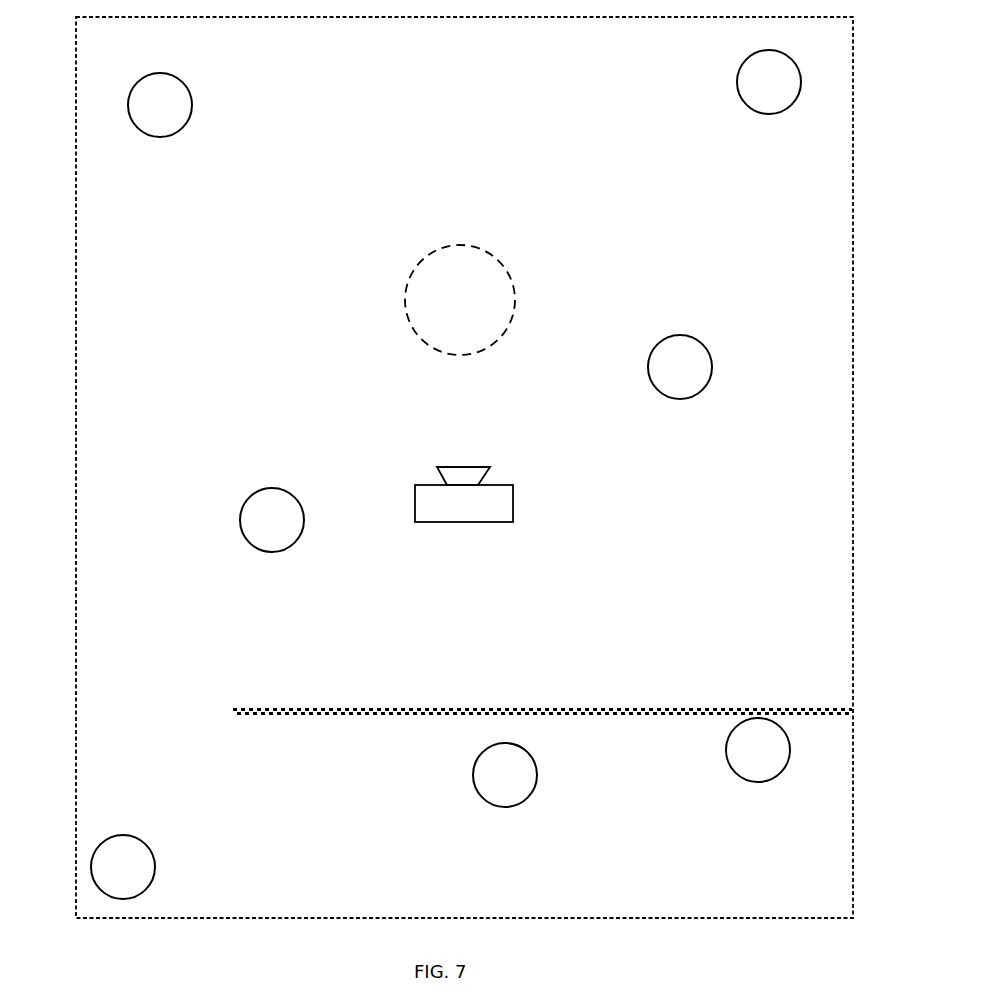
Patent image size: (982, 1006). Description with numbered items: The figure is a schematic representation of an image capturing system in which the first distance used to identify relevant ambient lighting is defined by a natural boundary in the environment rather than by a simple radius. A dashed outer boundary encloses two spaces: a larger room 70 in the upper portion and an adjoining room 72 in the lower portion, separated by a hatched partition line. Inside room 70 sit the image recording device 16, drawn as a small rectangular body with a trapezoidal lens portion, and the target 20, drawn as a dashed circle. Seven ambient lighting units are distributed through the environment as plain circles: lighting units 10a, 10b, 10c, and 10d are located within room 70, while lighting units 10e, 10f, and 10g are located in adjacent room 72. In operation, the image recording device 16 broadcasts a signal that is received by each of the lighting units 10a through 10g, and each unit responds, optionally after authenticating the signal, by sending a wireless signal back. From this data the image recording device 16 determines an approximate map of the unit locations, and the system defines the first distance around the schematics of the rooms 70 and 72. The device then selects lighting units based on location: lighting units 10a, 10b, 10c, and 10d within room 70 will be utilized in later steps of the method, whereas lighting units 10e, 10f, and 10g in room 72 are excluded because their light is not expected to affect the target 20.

The room 70 is at (67, 368).
The adjoining room 72 is at (68, 753).
The target 20 is at (395, 313).
The image recording device 16 is at (415, 532).
The lighting unit 10a is at (140, 143).
The lighting unit 10b is at (780, 117).
The lighting unit 10c is at (690, 330).
The lighting unit 10d is at (242, 502).
The lighting unit 10e is at (167, 833).
The lighting unit 10f is at (535, 807).
The lighting unit 10g is at (728, 788).